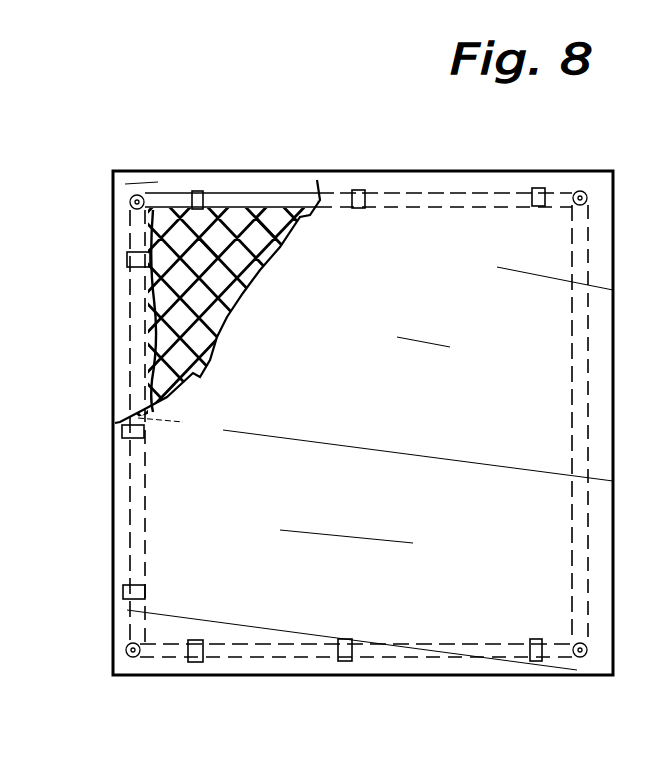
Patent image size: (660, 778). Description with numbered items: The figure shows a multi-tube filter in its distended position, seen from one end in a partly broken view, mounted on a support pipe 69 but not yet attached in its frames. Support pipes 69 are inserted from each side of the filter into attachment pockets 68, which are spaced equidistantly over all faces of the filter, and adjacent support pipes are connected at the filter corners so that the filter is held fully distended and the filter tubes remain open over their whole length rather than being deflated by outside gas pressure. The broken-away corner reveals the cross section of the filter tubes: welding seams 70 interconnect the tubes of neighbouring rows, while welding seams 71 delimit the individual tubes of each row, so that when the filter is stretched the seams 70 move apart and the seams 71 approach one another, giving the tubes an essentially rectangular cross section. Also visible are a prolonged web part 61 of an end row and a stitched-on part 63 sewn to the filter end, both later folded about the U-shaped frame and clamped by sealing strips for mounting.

The prolonged web part 61 is at (443, 197).
The stitched-on part 63 is at (362, 668).
The attachment pocket 68 is at (195, 195).
The support pipe 69 is at (232, 200).
The welding seam 70 is at (188, 207).
The welding seam 71 is at (207, 203).